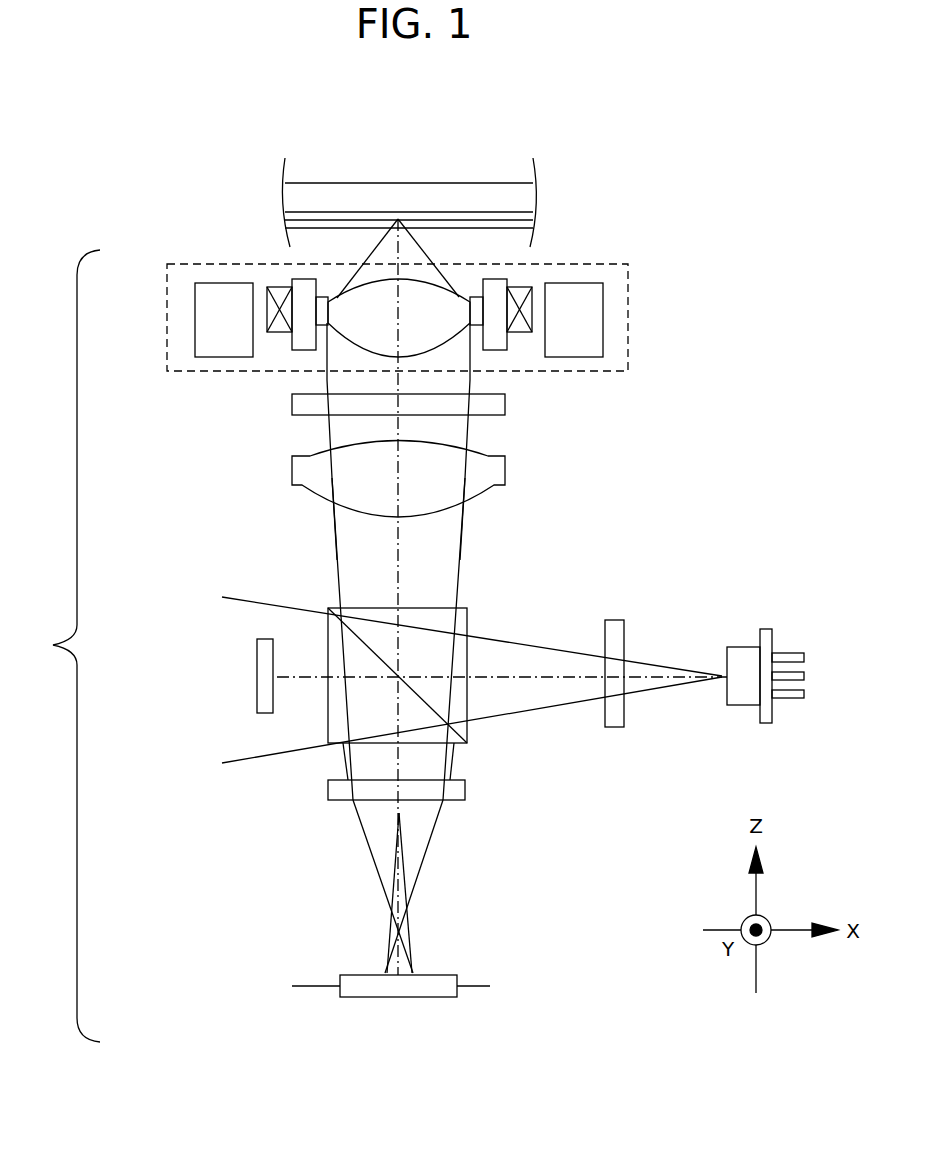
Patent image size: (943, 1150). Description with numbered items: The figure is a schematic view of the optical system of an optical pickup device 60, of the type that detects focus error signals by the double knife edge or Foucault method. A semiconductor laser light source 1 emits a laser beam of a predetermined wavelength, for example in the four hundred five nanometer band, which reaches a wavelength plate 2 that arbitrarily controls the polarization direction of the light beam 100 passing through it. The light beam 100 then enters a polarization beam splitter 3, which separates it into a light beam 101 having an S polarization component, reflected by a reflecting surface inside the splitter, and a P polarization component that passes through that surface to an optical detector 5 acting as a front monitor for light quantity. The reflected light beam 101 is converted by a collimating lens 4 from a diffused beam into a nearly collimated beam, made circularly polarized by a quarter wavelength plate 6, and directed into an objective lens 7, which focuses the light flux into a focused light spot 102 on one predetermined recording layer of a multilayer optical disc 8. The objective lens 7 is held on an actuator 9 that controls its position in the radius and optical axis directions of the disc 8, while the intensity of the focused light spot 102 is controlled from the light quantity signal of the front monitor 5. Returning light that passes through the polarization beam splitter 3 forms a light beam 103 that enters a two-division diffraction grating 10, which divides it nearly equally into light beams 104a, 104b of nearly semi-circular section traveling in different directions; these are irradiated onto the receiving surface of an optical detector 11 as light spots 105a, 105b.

The semiconductor laser light source 1 is at (745, 648).
The wavelength plate 2 is at (613, 620).
The polarization beam splitter 3 is at (332, 622).
The collimating lens 4 is at (505, 468).
The optical detector (front monitor) 5 is at (262, 660).
The 1/4 wavelength plate 6 is at (505, 404).
The objective lens 7 is at (362, 307).
The multilayer optical disc 8 is at (473, 192).
The actuator 9 is at (583, 264).
The two-division diffraction grating 10 is at (465, 790).
The optical detector 11 is at (422, 997).
The optical pickup device 60 is at (58, 646).
The light beam 100 is at (541, 653).
The light beam having an S polarization component 101 is at (450, 560).
The focused light spot 102 is at (400, 218).
The light beam passed through the PBS 103 is at (438, 760).
The light beam 104a is at (414, 870).
The light beam 104b is at (380, 870).
The light spot 105a is at (387, 961).
The light spot 105b is at (412, 959).